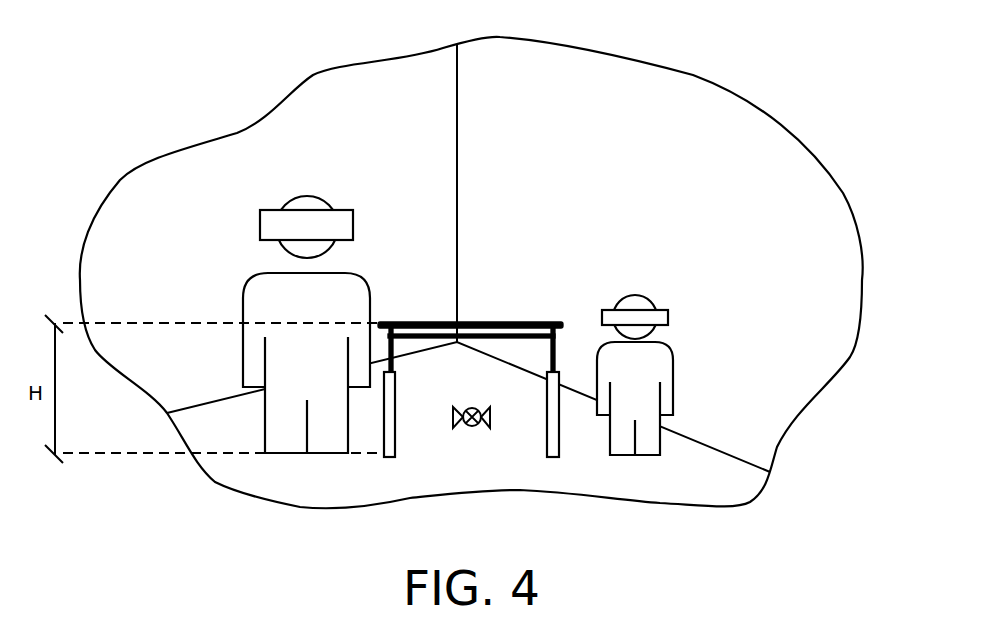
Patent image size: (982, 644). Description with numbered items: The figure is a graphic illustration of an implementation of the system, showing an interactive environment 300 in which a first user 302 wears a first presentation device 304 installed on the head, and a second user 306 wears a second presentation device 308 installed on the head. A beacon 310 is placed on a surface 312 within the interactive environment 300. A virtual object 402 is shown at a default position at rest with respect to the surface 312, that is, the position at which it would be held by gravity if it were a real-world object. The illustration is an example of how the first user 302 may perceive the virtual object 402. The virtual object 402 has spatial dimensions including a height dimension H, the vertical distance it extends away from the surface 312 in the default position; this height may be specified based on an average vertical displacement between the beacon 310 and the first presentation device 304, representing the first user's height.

The interactive environment 300 is at (372, 156).
The first user 302 is at (243, 322).
The first presentation device 304 is at (260, 217).
The second user 306 is at (673, 393).
The second presentation device 308 is at (668, 315).
The beacon 310 is at (470, 428).
The surface 312 is at (533, 465).
The virtual object 402 is at (500, 322).